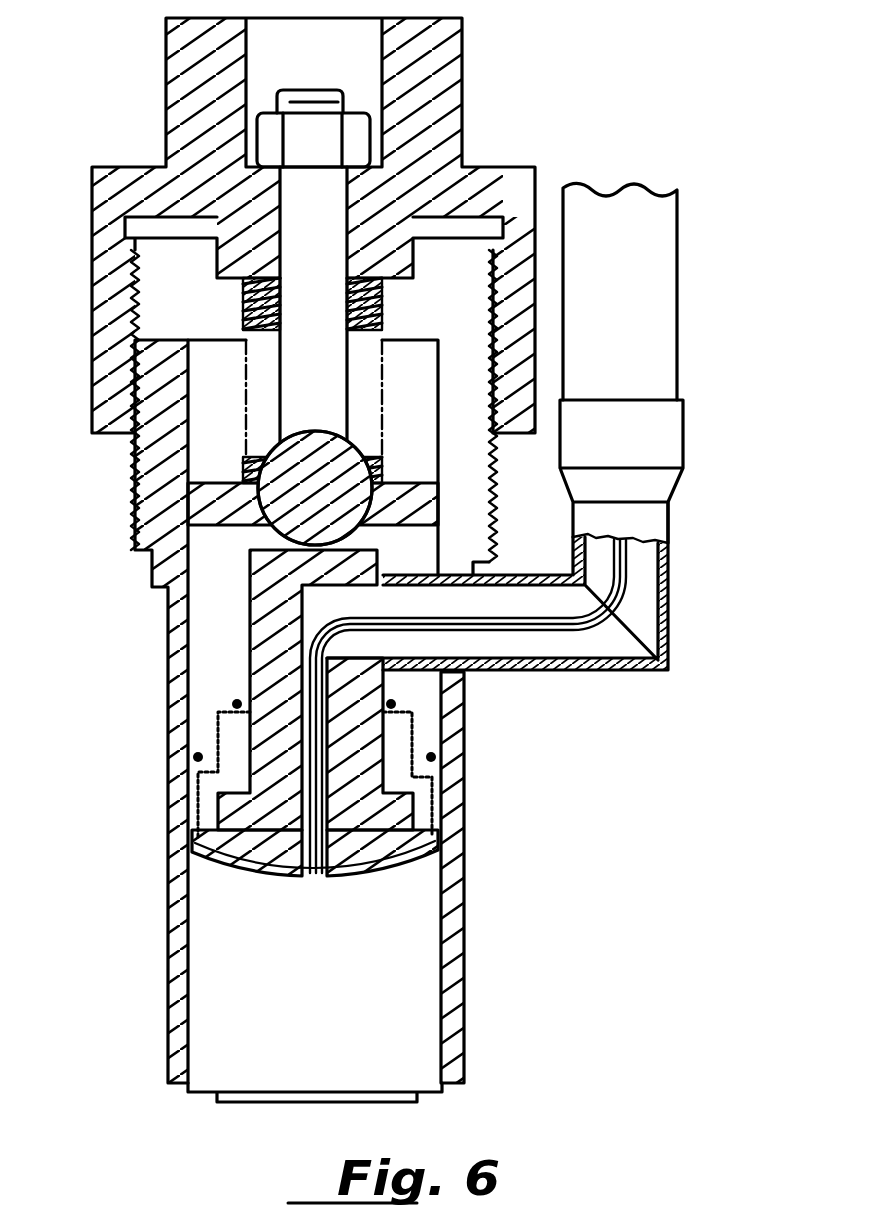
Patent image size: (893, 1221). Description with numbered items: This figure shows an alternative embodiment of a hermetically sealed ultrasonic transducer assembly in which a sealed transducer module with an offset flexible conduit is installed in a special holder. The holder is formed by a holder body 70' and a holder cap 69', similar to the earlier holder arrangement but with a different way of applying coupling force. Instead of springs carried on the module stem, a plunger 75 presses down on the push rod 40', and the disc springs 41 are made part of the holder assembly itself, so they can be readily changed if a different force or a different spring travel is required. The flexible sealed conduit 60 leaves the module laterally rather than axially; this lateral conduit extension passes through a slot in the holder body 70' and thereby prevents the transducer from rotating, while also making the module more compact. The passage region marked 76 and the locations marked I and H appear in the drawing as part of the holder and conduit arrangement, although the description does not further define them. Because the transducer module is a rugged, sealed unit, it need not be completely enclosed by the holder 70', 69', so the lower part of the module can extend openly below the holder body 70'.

The holder cap 69' is at (294, 290).
The disc springs 41 is at (247, 303).
The plunger 75 is at (217, 498).
The holder body 70' is at (286, 721).
The push rod 40' is at (270, 713).
The outlet passage 76 is at (452, 682).
The inlet passage tube I is at (385, 673).
The fitting housing H is at (668, 672).
The flexible sealed conduit 60 is at (657, 260).